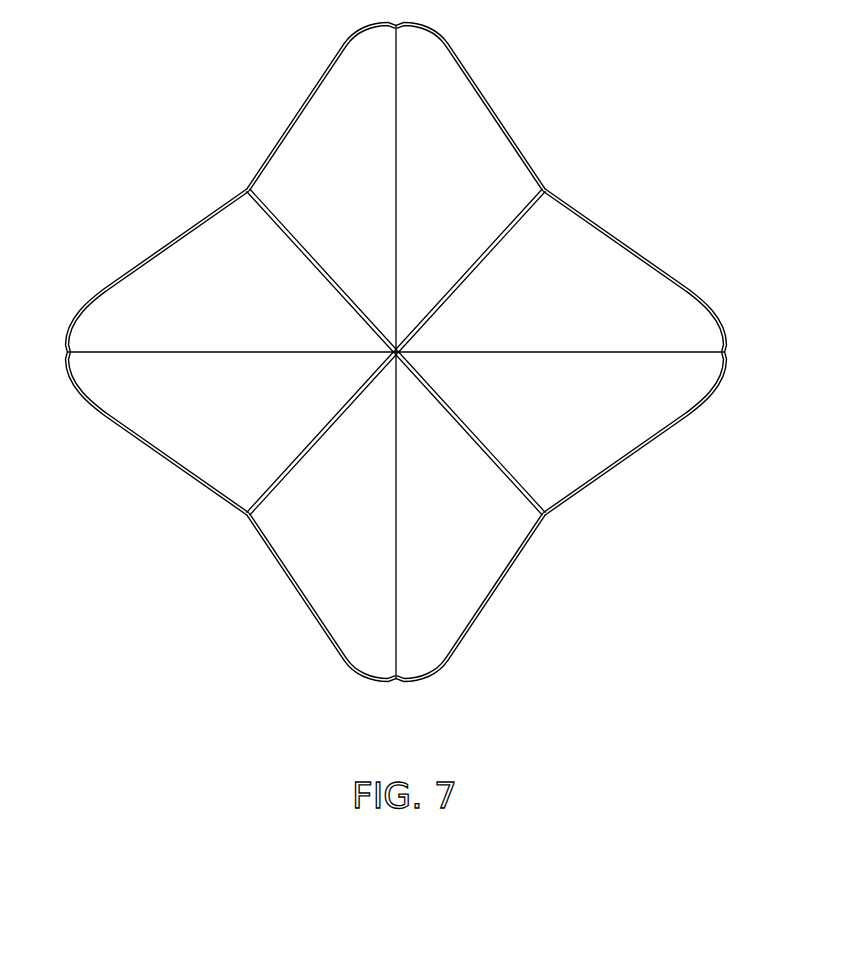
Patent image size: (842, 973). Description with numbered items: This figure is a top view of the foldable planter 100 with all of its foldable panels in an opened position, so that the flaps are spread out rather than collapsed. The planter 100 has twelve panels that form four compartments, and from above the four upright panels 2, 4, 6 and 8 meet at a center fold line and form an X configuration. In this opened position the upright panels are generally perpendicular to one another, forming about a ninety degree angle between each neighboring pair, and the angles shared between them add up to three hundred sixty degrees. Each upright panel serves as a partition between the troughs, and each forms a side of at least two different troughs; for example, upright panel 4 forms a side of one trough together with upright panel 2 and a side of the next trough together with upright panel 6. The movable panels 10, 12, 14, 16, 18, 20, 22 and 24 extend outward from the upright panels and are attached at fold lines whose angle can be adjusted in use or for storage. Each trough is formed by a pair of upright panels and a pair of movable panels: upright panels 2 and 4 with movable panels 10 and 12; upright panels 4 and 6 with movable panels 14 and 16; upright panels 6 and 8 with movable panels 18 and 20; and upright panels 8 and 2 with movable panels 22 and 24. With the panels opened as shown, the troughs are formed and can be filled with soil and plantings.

The planter 100 is at (396, 352).
The upright panel 2 is at (517, 478).
The upright panel 4 is at (275, 478).
The upright panel 6 is at (275, 228).
The upright panel 8 is at (517, 227).
The movable panel 10 is at (470, 555).
The movable panel 12 is at (323, 555).
The movable panel 14 is at (155, 417).
The movable panel 16 is at (155, 288).
The movable panel 18 is at (322, 148).
The movable panel 20 is at (470, 150).
The movable panel 22 is at (637, 290).
The movable panel 24 is at (637, 417).